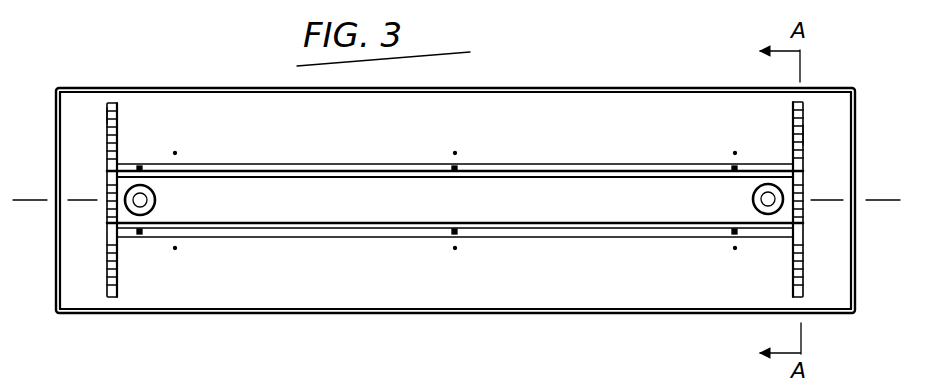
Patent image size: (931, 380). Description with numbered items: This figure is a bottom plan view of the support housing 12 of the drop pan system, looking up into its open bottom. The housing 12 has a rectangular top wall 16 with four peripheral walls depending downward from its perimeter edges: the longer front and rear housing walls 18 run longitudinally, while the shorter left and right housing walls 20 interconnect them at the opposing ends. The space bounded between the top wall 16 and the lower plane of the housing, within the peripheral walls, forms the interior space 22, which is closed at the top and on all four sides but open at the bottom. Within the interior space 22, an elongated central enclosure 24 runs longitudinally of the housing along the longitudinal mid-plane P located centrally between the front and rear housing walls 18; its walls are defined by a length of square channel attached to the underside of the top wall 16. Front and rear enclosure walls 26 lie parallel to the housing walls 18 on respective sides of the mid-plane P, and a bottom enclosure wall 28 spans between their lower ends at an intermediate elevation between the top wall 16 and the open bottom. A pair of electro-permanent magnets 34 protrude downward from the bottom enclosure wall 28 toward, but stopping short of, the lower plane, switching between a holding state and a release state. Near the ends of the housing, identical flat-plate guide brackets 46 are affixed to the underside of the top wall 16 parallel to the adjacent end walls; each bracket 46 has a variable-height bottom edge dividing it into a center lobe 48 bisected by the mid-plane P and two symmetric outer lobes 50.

The housing 12 is at (533, 86).
The top wall 16 is at (405, 293).
The front and rear housing walls 18 is at (581, 88).
The left and right housing walls 20 is at (56, 127).
The interior space 22 is at (236, 285).
The central enclosure 24 is at (339, 201).
The front and rear enclosure walls 26 is at (229, 174).
The bottom enclosure wall 28 is at (270, 197).
The electro-permanent magnets 34 is at (158, 201).
The guide brackets 46 is at (101, 110).
The center lobe 48 is at (115, 213).
The outer lobes 50 is at (118, 115).
The longitudinal mid-plane P is at (878, 210).